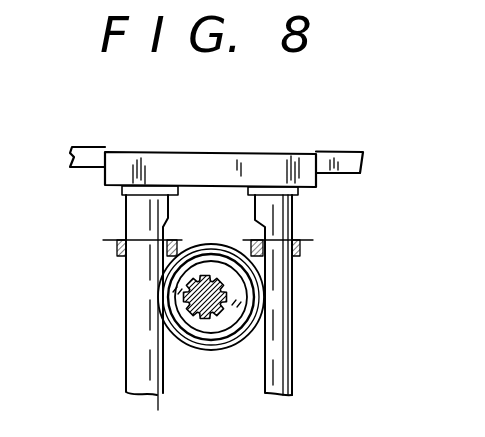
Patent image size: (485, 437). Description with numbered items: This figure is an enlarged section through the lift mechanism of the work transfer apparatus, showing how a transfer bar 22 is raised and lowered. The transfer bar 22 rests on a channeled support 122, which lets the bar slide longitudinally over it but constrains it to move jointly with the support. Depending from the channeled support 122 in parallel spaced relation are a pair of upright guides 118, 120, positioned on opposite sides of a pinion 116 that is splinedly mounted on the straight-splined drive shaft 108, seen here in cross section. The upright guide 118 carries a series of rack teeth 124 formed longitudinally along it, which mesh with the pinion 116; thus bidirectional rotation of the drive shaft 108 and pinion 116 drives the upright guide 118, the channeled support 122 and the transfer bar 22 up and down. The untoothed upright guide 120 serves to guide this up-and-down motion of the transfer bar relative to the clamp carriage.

The transfer bar 22 is at (340, 163).
The channeled support 122 is at (316, 181).
The upright guide 118 is at (128, 218).
The upright guide 120 is at (284, 212).
The pinion 116 is at (224, 350).
The drive shaft 108 is at (205, 279).
The rack teeth 124 is at (160, 362).